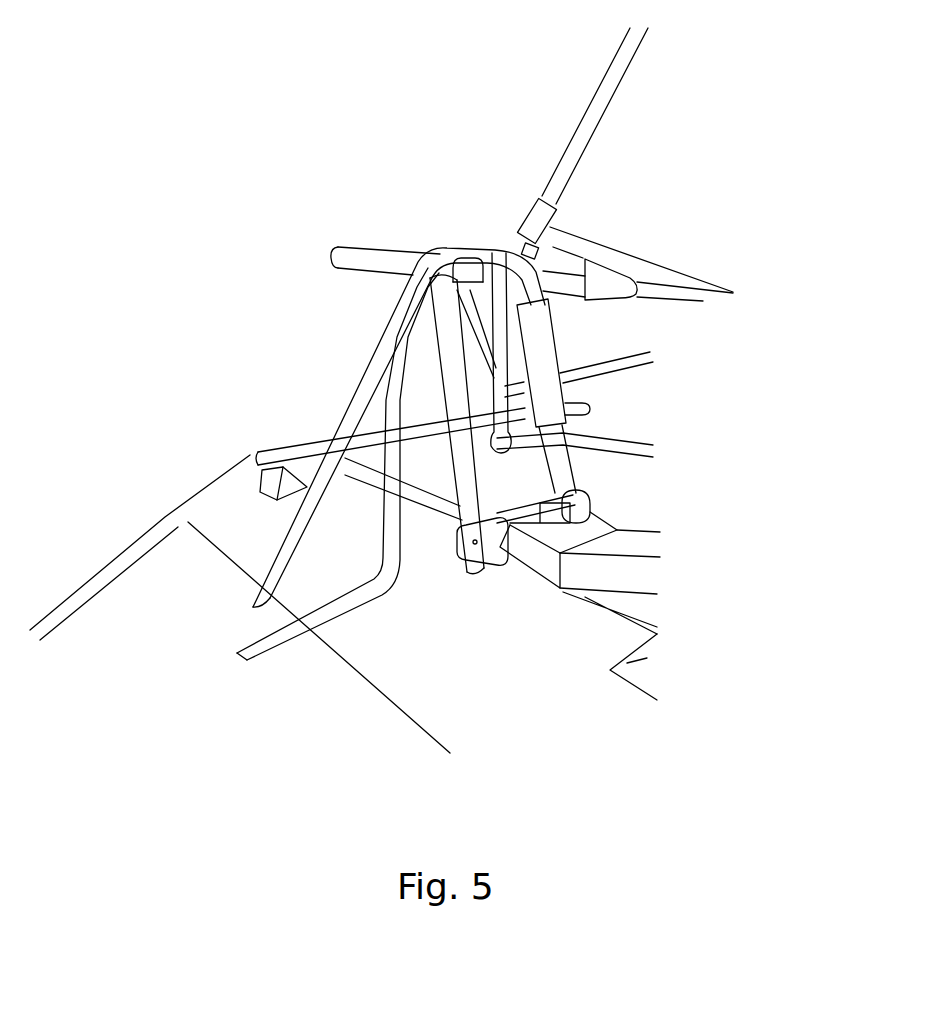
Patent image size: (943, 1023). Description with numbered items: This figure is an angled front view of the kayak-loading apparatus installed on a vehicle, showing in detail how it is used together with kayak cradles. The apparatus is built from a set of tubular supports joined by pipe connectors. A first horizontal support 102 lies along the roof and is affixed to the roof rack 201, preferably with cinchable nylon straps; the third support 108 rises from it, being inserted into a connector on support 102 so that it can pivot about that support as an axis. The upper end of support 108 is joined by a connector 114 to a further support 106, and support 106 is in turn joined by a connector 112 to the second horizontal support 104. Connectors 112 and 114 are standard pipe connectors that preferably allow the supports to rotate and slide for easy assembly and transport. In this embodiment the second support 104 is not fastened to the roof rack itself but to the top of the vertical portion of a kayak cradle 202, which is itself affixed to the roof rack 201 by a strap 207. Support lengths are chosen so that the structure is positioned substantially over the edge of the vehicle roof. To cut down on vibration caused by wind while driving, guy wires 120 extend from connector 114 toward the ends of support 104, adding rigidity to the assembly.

The first horizontal support 102 is at (248, 455).
The second horizontal support 104 is at (330, 253).
The support 106 is at (568, 246).
The third support 108 is at (600, 124).
The connector 112 is at (621, 298).
The connector 114 is at (520, 217).
The guy wires 120 is at (666, 268).
The roof rack 201 is at (412, 502).
The kayak cradle 202 is at (545, 371).
The strap 207 is at (478, 261).